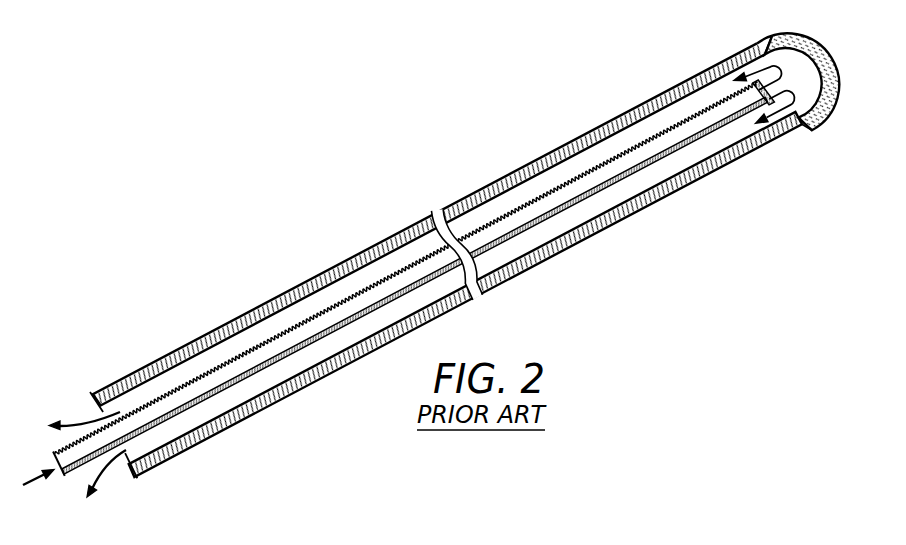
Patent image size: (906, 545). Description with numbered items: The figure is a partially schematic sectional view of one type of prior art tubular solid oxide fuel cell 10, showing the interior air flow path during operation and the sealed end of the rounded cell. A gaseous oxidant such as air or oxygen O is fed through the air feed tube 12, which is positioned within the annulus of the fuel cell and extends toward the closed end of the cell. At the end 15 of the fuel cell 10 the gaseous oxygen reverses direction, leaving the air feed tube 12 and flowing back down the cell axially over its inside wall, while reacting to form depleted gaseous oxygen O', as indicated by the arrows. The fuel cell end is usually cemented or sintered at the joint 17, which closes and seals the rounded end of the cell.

The tubular solid oxide fuel cell 10 is at (440, 265).
The air feed tube 12 is at (72, 470).
The end of the fuel cell 15 is at (778, 42).
The joint 17 is at (823, 116).
The gaseous oxidant O is at (38, 456).
The depleted gaseous oxygen O' is at (97, 443).